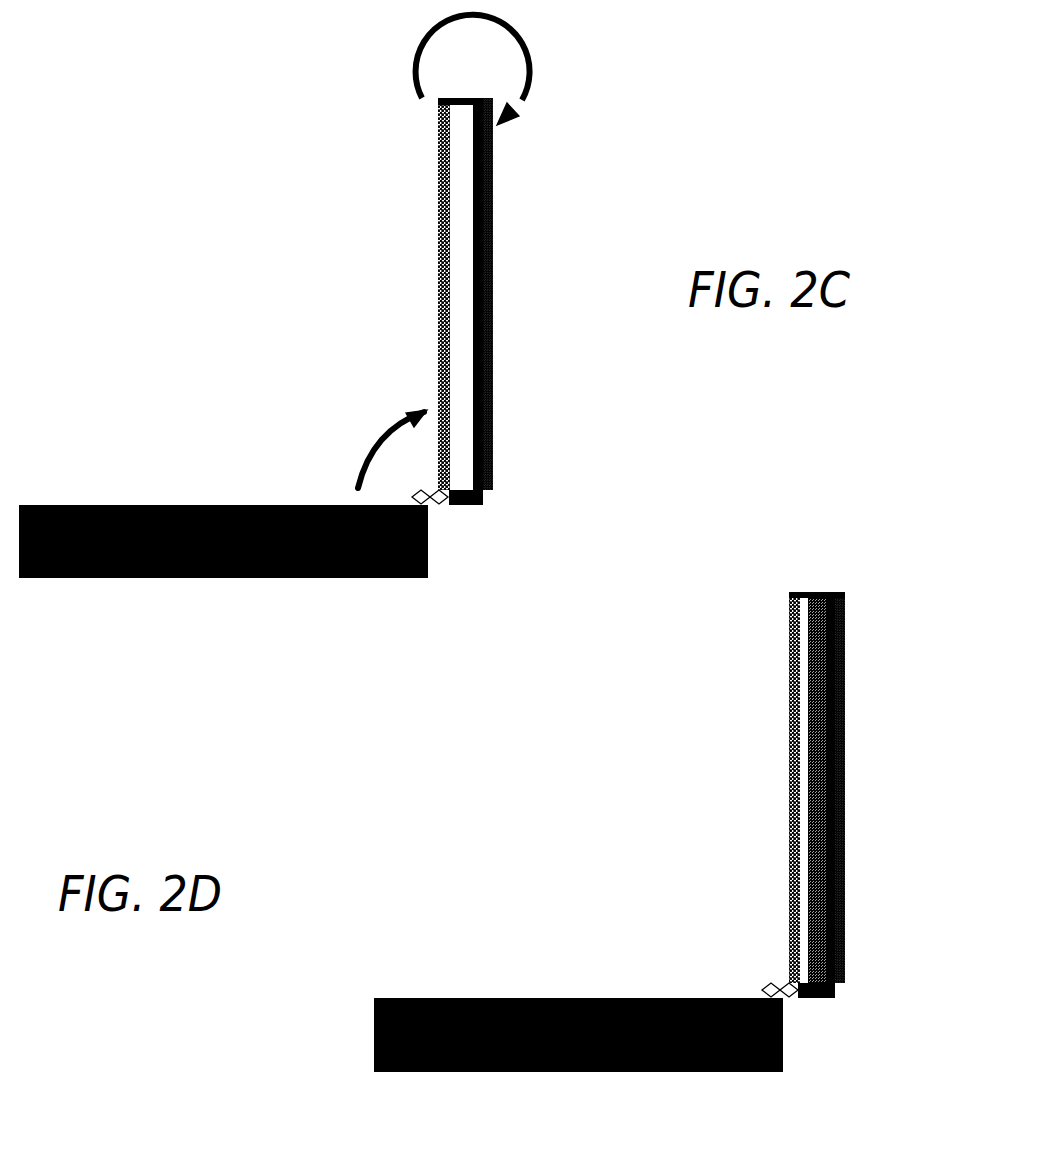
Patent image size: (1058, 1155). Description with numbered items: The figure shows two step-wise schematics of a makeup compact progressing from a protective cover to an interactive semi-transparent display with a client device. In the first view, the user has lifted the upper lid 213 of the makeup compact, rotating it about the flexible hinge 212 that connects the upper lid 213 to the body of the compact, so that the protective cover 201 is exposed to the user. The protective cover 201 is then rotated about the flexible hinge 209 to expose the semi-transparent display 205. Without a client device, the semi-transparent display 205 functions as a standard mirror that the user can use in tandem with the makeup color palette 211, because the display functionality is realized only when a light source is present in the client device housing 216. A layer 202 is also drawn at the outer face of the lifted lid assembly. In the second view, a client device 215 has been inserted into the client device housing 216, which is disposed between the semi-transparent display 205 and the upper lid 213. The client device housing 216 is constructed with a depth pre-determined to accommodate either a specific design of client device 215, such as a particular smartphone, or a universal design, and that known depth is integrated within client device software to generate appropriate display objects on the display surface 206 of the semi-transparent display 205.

In FIG. 2C, the protective cover 201 is at (497, 228).
In FIG. 2D, the protective cover 201 is at (853, 822).
In FIG. 2C, the display panel 202 is at (437, 128).
In FIG. 2C, the semi-transparent display 205 is at (437, 208).
In FIG. 2D, the semi-transparent display 205 is at (772, 627).
In FIG. 2D, the display surface 206 is at (780, 705).
In FIG. 2C, the flexible hinge 209 is at (452, 93).
In FIG. 2D, the flexible hinge 209 is at (805, 588).
In FIG. 2C, the makeup color palette 211 is at (177, 492).
In FIG. 2D, the makeup color palette 211 is at (537, 988).
In FIG. 2C, the flexible hinge 212 is at (441, 514).
In FIG. 2C, the upper lid 213 is at (483, 187).
In FIG. 2D, the upper lid 213 is at (822, 1003).
In FIG. 2D, the client device 215 is at (818, 717).
In FIG. 2C, the client device housing 216 is at (458, 333).
In FIG. 2D, the client device housing 216 is at (803, 792).